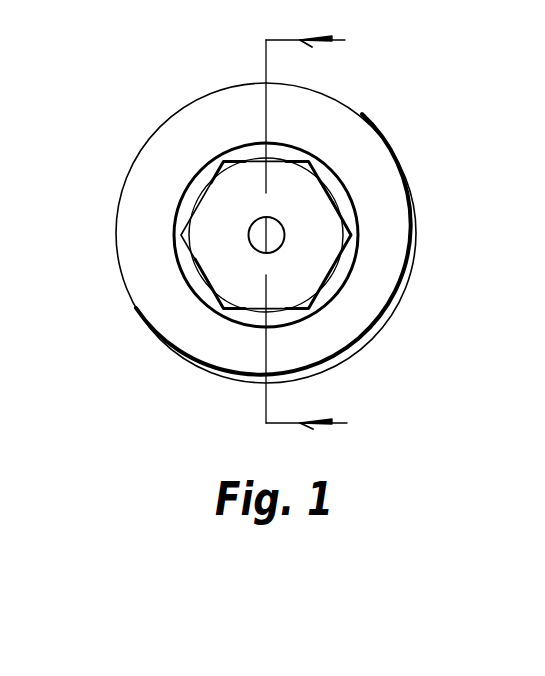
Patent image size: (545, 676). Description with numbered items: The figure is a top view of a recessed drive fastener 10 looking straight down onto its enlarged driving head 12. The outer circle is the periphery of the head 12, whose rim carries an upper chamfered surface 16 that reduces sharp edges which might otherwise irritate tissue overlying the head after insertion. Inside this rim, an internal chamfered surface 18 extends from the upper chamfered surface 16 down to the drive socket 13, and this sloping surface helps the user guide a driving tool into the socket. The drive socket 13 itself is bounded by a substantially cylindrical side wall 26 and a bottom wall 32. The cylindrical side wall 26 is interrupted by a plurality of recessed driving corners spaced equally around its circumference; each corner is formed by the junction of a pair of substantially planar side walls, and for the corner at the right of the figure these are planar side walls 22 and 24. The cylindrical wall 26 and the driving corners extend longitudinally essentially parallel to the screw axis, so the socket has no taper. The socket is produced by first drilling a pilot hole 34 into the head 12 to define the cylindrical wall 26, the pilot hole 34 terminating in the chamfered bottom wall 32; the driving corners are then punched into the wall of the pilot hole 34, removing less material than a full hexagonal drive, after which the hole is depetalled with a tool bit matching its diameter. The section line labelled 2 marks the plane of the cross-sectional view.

The section line 2- 2 is at (321, 232).
The fastener 10 is at (357, 110).
The enlarged driving head 12 is at (383, 200).
The drive socket 13 is at (302, 211).
The upper chamfered surface 16 is at (145, 224).
The internal chamfered surface 18 is at (190, 277).
The substantially planar side wall 22 is at (355, 249).
The substantially planar side wall 24 is at (355, 212).
The cylindrical side wall 26 is at (333, 275).
The bottom wall 32 is at (237, 272).
The pilot hole 34 is at (227, 196).